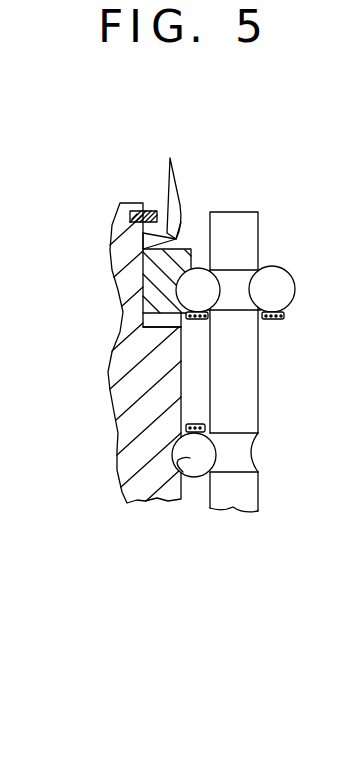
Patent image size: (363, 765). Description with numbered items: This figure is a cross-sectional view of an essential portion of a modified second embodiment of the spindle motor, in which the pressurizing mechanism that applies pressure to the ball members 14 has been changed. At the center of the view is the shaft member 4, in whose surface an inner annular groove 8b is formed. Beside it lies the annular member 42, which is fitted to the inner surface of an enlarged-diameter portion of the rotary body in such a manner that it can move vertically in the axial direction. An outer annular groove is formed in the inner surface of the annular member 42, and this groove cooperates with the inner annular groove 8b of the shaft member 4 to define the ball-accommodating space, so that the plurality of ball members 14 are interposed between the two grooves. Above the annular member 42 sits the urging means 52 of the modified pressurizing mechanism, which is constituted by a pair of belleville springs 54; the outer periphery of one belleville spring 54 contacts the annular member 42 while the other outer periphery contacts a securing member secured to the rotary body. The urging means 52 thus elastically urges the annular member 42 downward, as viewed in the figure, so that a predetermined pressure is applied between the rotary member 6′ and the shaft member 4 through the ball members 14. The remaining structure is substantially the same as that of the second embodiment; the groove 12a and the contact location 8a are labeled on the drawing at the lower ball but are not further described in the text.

The shaft member 4 is at (246, 196).
The rotary member 6′ is at (128, 519).
The contact point 8a is at (213, 451).
The inner annular groove 8b is at (204, 293).
The ball groove 12a is at (183, 472).
The ball members 14 is at (281, 285).
The annular member 42 is at (157, 276).
The urging means 52 is at (180, 230).
The belleville springs 54 is at (170, 158).